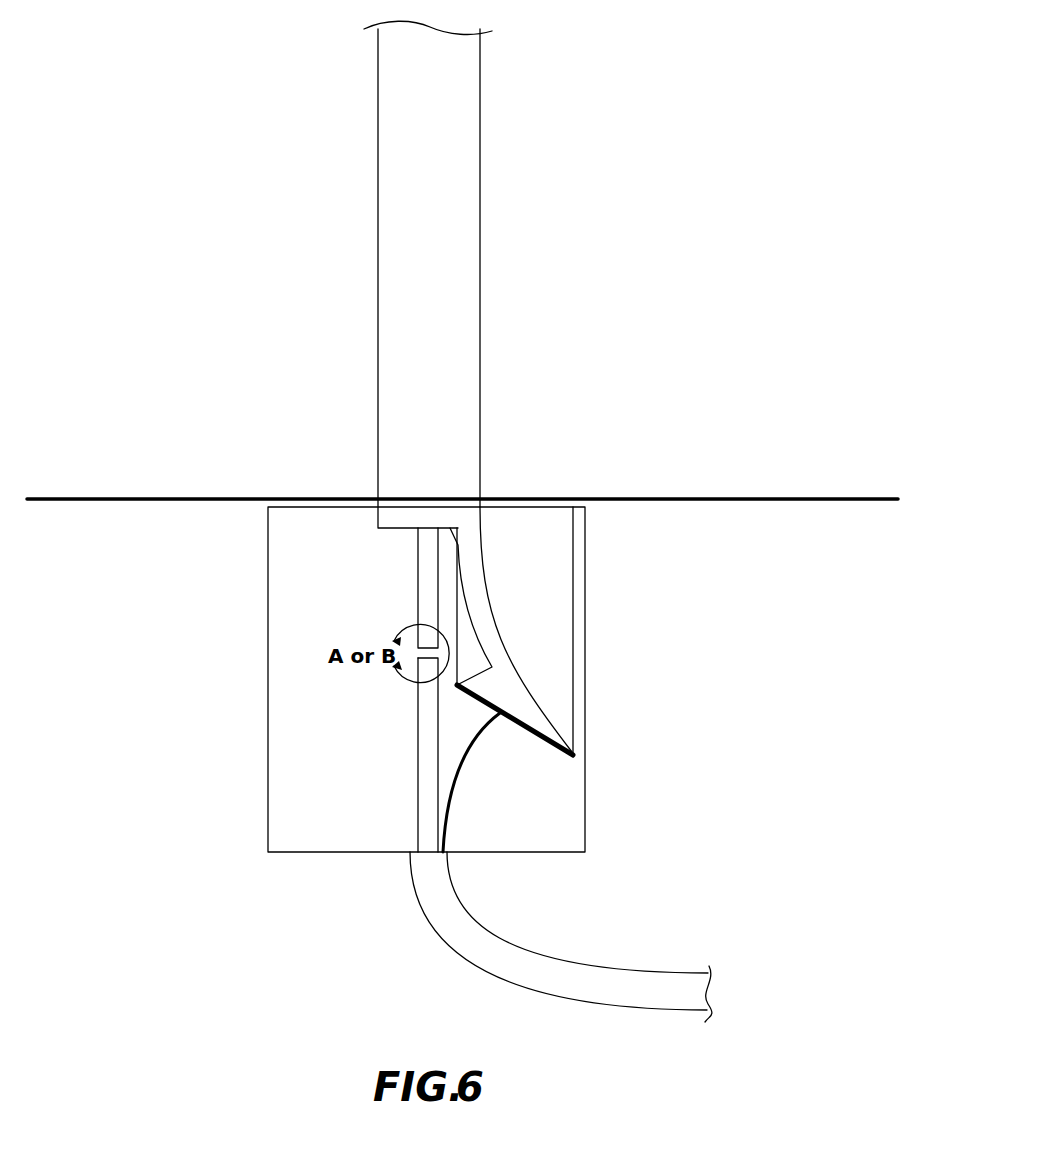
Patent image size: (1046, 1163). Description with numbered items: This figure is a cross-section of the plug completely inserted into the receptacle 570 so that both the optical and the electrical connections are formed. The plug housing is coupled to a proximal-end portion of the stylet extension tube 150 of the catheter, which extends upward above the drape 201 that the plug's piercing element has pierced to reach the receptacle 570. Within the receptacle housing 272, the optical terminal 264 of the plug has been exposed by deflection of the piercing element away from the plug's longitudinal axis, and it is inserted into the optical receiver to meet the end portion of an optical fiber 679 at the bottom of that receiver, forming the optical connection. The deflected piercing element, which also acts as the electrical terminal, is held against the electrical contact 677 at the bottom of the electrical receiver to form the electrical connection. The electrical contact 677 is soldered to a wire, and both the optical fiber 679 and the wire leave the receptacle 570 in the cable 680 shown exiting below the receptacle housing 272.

The stylet extension tube 150 is at (466, 250).
The drape 201 is at (70, 498).
The optical terminal 264 is at (423, 580).
The receptacle housing 272 is at (587, 825).
The receptacle 570 is at (150, 689).
The electrical contact 677 is at (548, 748).
The optical fiber 679 is at (418, 755).
The cable 680 is at (437, 936).